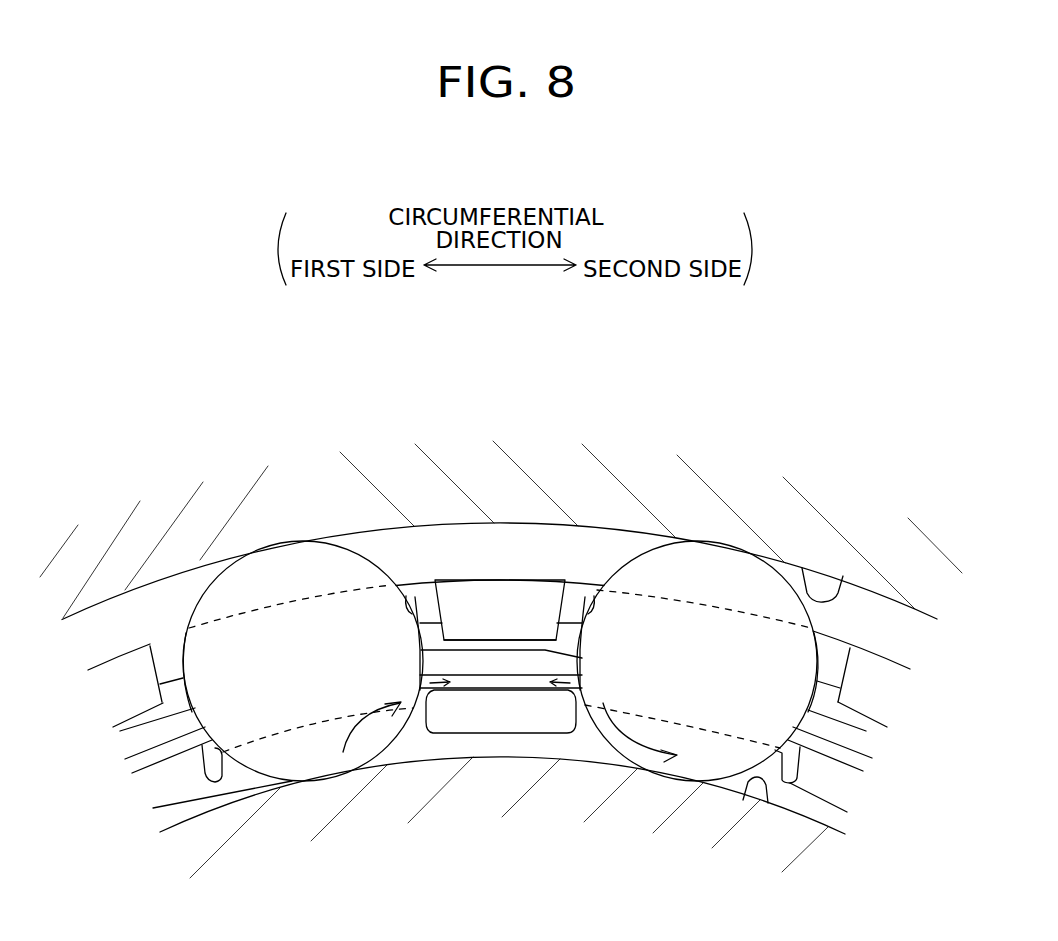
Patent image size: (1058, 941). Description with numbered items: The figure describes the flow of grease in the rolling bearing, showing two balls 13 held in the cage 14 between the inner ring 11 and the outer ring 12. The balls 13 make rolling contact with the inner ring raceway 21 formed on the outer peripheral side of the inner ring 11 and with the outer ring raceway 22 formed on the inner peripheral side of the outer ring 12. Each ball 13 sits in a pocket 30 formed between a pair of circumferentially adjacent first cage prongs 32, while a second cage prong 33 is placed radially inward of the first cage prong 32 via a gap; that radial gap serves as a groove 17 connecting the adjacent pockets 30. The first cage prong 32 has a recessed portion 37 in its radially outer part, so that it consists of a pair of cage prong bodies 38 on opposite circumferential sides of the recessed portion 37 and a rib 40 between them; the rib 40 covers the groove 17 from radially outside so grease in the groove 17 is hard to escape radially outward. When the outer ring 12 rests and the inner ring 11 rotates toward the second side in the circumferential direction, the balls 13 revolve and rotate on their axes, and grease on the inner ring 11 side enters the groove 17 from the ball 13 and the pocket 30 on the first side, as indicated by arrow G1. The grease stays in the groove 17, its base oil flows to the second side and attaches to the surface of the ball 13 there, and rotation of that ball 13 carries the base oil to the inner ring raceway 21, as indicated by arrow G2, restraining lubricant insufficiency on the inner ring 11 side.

The inner ring 11 is at (379, 803).
The outer ring 12 is at (115, 537).
The ball 13 is at (278, 586).
The cage 14 is at (880, 655).
The groove 17 is at (490, 664).
The inner ring raceway 21 is at (768, 803).
The outer ring raceway 22 is at (843, 575).
The pocket 30 is at (229, 768).
The first cage prong 32 is at (435, 580).
The second cage prong 33 is at (498, 720).
The recessed portion 37 is at (511, 598).
The cage prong body 38 is at (408, 595).
The rib 40 is at (528, 640).
The arrow G1 is at (414, 706).
The arrow G2 is at (586, 706).